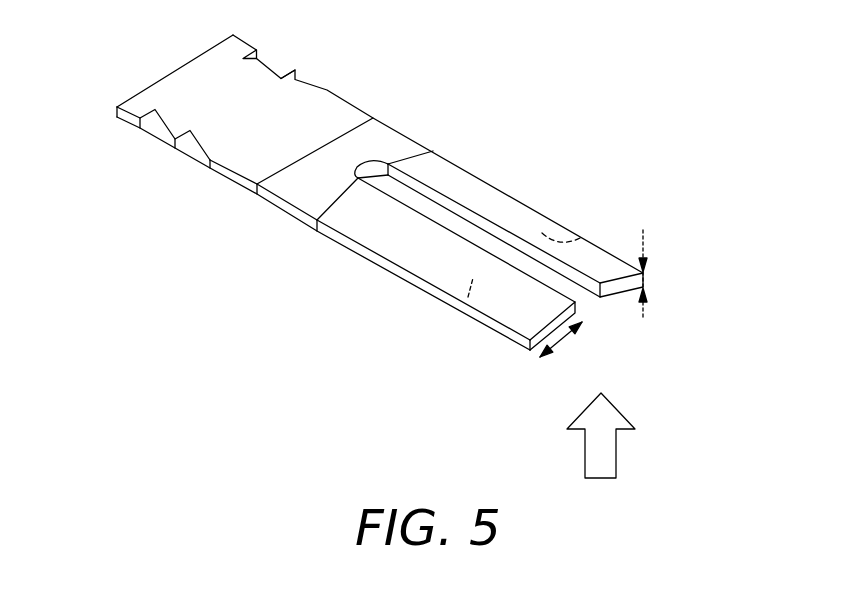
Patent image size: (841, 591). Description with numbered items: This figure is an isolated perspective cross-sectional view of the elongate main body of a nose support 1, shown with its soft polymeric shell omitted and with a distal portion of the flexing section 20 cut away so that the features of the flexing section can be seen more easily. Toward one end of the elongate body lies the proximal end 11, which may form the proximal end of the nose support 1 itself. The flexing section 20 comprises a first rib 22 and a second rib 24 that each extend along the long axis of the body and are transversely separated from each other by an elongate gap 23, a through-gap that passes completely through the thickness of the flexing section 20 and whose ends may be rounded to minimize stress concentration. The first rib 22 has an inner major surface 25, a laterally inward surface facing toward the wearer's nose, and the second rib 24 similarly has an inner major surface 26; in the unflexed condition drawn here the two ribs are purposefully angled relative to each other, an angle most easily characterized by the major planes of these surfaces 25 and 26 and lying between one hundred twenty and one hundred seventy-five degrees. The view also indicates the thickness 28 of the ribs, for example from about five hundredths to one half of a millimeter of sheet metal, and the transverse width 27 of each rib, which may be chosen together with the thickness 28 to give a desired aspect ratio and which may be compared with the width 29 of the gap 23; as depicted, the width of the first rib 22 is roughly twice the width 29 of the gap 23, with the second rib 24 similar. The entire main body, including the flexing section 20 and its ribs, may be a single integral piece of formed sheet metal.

The nose support 1 is at (628, 95).
The proximal end 11 is at (143, 37).
The flexing section 20 is at (505, 438).
The first rib 22 is at (370, 226).
The gap 23 is at (443, 215).
The second rib 24 is at (436, 166).
The inner major surface 25 is at (463, 313).
The inner major surface 26 is at (580, 238).
The width 27 is at (566, 338).
The thickness 28 is at (644, 236).
The width of gap 29 is at (581, 303).